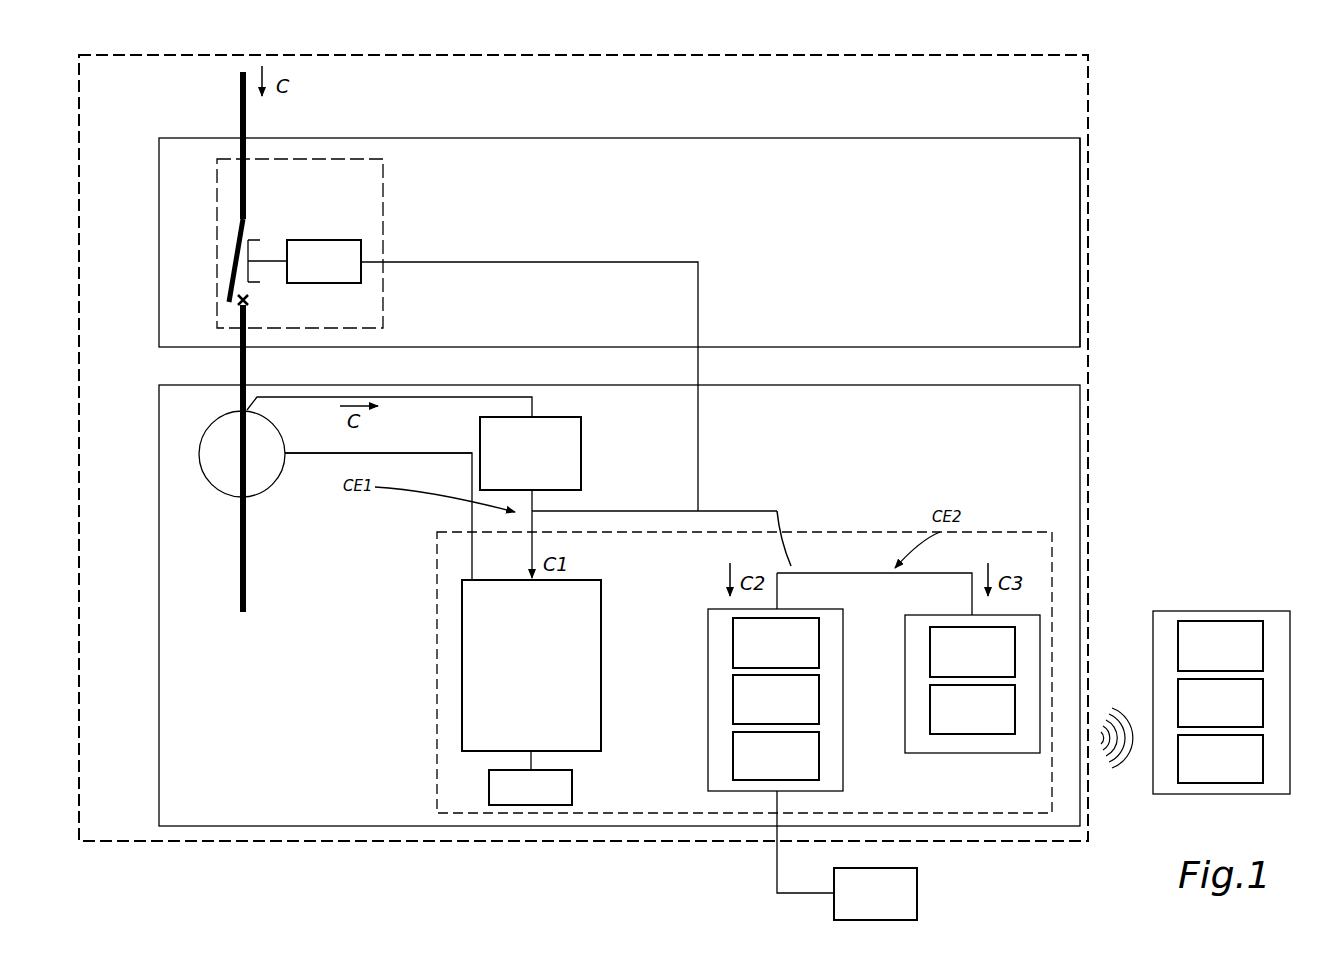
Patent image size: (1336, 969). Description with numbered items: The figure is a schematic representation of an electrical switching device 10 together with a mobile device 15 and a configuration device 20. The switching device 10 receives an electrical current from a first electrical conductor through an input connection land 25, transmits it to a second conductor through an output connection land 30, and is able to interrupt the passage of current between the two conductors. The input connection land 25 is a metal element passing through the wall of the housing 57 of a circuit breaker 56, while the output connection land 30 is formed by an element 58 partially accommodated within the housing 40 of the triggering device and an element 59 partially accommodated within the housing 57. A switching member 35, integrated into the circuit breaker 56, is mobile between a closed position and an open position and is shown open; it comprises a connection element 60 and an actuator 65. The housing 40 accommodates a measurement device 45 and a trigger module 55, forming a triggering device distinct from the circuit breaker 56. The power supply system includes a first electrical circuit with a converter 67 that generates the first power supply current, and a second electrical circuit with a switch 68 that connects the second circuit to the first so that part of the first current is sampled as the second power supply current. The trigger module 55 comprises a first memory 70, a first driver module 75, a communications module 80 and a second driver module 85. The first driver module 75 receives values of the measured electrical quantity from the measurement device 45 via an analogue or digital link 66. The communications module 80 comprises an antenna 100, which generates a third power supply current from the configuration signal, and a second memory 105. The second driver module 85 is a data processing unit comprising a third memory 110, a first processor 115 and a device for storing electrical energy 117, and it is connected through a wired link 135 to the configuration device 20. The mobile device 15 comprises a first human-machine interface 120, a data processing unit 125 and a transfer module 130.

The electrical switching device 10 is at (1090, 148).
The mobile device 15 is at (1273, 594).
The configuration device 20 is at (875, 894).
The input connection land 25 is at (238, 112).
The output connection land 30 is at (238, 598).
The switching member 35 is at (217, 263).
The housing 40 is at (1082, 426).
The measurement device 45 is at (365, 488).
The trigger module 55 is at (437, 675).
The circuit breaker 56 is at (155, 195).
The housing of the circuit breaker 57 is at (1082, 288).
The element of the output connection land 58 is at (248, 600).
The element of the output connection land 59 is at (230, 333).
The connection element 60 is at (242, 227).
The actuator 65 is at (492, 375).
The analogue or digital link 66 is at (443, 452).
The converter 67 is at (530, 497).
The switch 68 is at (797, 540).
The first memory 70 is at (530, 778).
The first driver module 75 is at (531, 665).
The communications module 80 is at (1042, 645).
The second driver module 85 is at (708, 722).
The antenna 100 is at (972, 709).
The second memory 105 is at (972, 652).
The third memory 110 is at (776, 643).
The first processor 115 is at (776, 699).
The device for storing electrical energy 117 is at (776, 756).
The first human-machine interface 120 is at (1220, 646).
The data processing unit 125 is at (1220, 703).
The transfer module 130 is at (1220, 759).
The wired link 135 is at (777, 868).